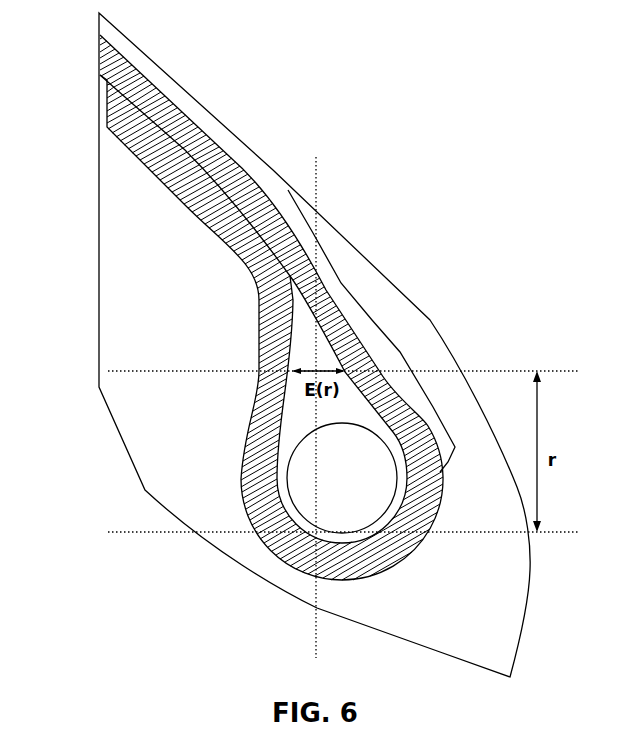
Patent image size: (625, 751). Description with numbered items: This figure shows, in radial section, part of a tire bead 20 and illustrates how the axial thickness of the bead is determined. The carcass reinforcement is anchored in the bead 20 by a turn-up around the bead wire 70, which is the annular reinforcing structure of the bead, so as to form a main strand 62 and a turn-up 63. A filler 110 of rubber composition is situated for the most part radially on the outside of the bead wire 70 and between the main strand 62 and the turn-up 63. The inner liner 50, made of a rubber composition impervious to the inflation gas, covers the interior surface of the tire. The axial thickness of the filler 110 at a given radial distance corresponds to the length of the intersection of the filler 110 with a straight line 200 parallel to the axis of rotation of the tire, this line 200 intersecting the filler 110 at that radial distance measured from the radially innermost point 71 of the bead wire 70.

The bead 20 is at (138, 332).
The inner liner 50 is at (378, 342).
The main strand 62 is at (186, 137).
The turn-up 63 is at (202, 210).
The bead wire 70 is at (330, 490).
The radially innermost point 71 is at (342, 541).
The filler 110 is at (295, 398).
The straight line 200 is at (478, 371).